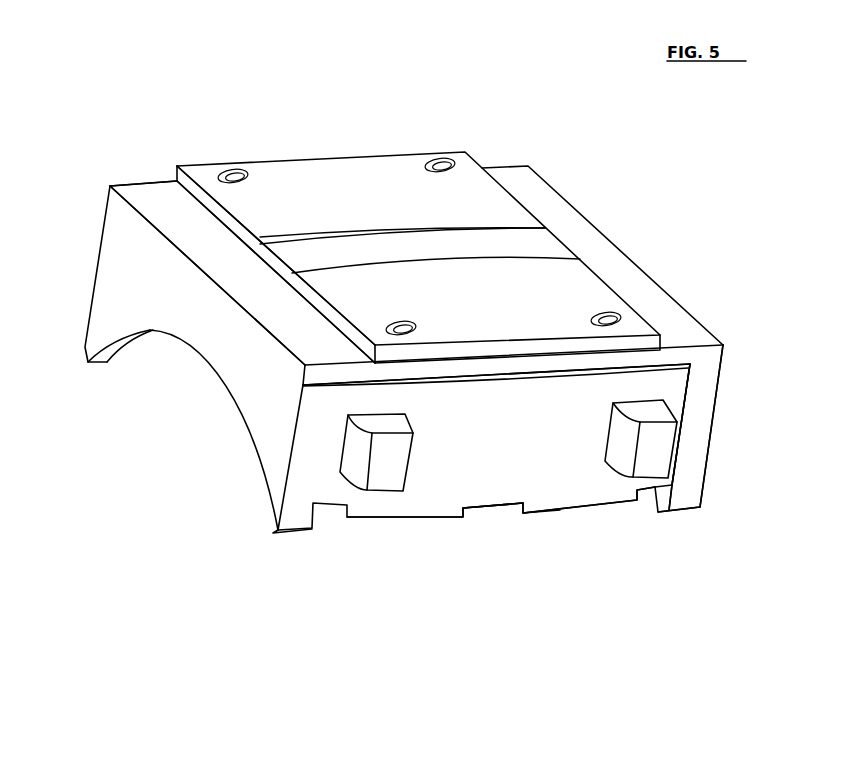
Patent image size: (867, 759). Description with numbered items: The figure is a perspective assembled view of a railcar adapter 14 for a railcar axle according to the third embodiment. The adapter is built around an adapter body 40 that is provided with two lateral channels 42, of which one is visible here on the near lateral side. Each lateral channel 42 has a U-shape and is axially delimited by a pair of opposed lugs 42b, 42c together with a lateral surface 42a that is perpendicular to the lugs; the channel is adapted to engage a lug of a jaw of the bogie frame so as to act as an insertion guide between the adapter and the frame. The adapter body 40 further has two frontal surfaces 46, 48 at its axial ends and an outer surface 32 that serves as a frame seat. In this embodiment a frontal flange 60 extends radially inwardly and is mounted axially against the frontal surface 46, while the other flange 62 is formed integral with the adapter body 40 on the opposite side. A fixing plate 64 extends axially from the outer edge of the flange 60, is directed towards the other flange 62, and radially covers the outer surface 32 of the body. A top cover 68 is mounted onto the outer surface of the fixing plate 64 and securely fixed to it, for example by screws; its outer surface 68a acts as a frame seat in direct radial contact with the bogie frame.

The railcar adapter 14 is at (134, 163).
The outer surface 32 is at (195, 276).
The adapter body 40 is at (537, 507).
The lateral channel 42 is at (485, 460).
The lateral surface 42a is at (577, 478).
The lug 42b is at (663, 442).
The lug 42c is at (385, 487).
The frontal surface 46 is at (685, 395).
The frontal surface 48 is at (108, 313).
The frontal flange 60 is at (693, 477).
The other flange 62 is at (263, 466).
The fixing plate 64 is at (137, 223).
The top cover 68 is at (372, 160).
The outer surface 68a is at (321, 190).